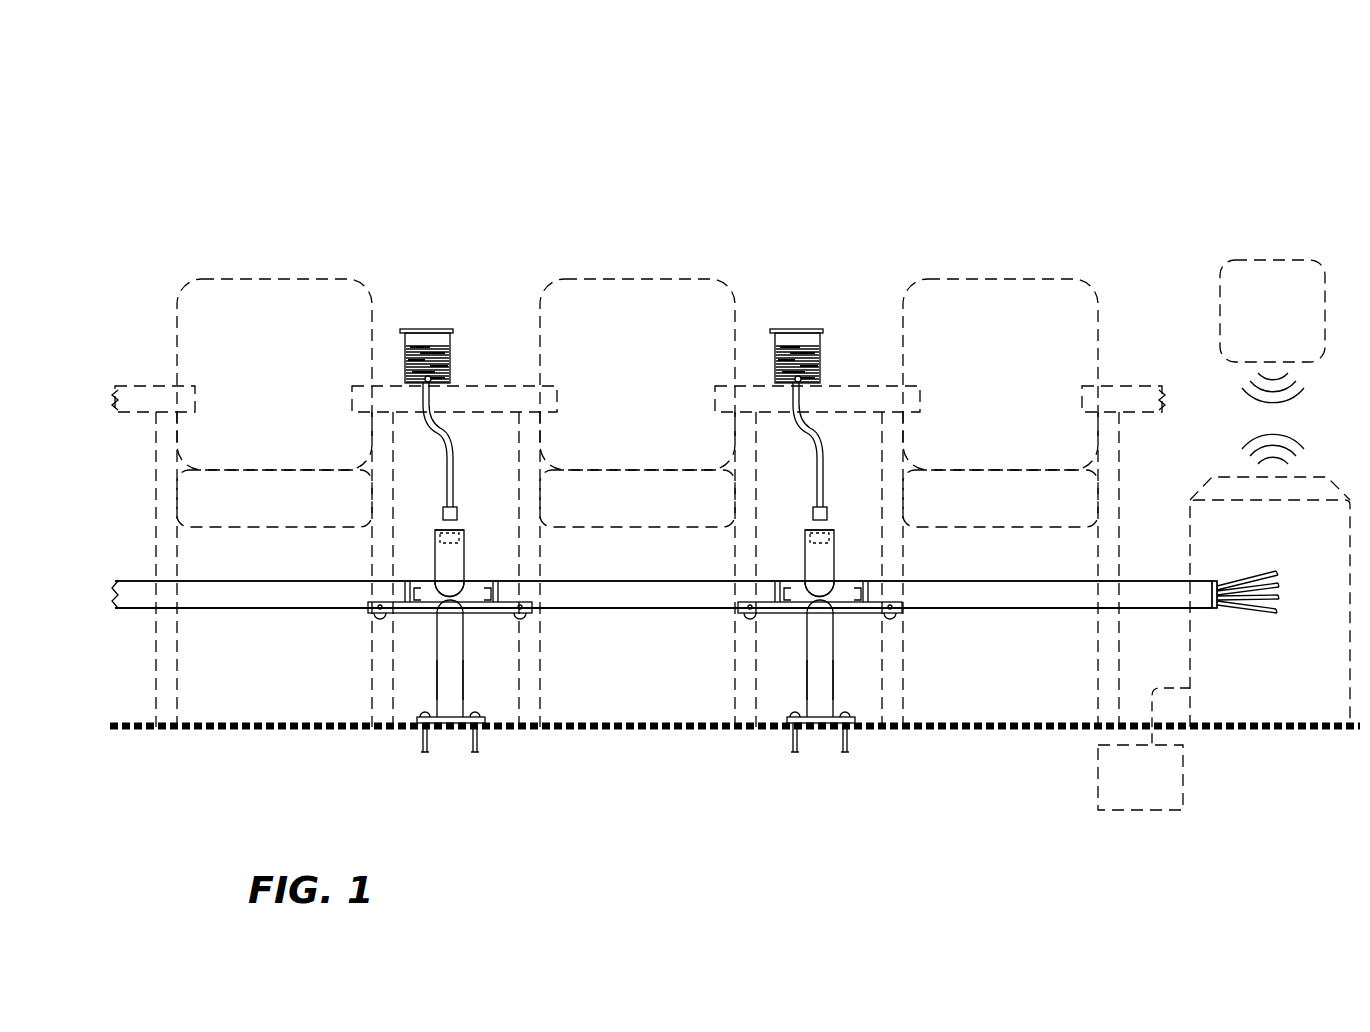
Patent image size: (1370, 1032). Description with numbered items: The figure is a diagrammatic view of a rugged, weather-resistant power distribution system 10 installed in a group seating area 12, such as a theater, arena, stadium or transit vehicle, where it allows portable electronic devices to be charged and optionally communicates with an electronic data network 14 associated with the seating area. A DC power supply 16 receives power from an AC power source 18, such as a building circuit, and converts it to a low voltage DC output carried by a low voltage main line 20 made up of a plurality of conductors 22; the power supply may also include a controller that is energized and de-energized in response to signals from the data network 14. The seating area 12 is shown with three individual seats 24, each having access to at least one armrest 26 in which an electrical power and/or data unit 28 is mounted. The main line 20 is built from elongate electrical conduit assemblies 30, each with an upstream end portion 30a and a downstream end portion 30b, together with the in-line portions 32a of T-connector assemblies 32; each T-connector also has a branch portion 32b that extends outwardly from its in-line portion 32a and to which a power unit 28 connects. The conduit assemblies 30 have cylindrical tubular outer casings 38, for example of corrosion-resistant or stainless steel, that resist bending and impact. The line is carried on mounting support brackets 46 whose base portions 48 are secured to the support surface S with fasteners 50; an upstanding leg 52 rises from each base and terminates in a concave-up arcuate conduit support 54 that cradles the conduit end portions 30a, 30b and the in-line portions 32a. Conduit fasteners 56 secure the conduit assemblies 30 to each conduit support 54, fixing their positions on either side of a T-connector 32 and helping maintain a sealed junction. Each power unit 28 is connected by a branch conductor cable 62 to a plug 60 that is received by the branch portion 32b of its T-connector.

The power distribution system 10 is at (1170, 468).
The group seating area 12 is at (997, 115).
The electronic data network 14 is at (1238, 258).
The DC power supply 16 is at (1328, 478).
The AC power source 18 is at (1098, 785).
The low voltage main line 20 is at (1228, 566).
The conductors 22 is at (1294, 580).
The seats 24 is at (345, 262).
The armrest 26 is at (160, 385).
The power and/or data units 28 is at (437, 328).
The electrical conduit assemblies 30 is at (222, 613).
The upstream end portion 30a is at (356, 615).
The downstream end portion 30b is at (526, 567).
The T-connector assemblies 32 is at (478, 560).
The in-line portions 32a is at (430, 580).
The branch portions 32b is at (436, 533).
The tubular outer casings 38 is at (290, 612).
The mounting support brackets 46 is at (414, 673).
The base portions 48 is at (455, 715).
The fasteners 50 is at (423, 745).
The upstanding legs 52 is at (437, 655).
The arcuate conduit supports 54 is at (488, 614).
The conduit fasteners 56 is at (375, 615).
The plugs 60 is at (457, 505).
The branch conductor cables 62 is at (456, 456).
The support surface S is at (142, 722).